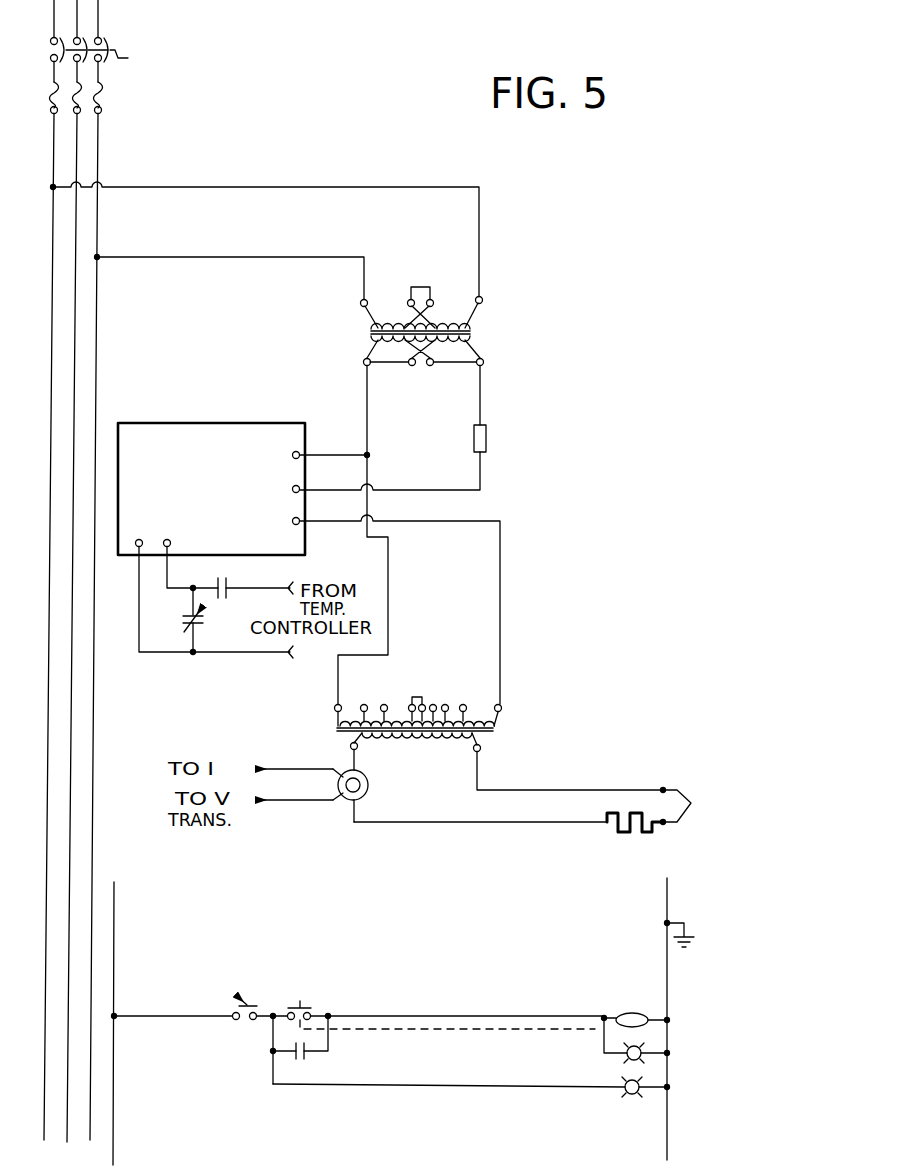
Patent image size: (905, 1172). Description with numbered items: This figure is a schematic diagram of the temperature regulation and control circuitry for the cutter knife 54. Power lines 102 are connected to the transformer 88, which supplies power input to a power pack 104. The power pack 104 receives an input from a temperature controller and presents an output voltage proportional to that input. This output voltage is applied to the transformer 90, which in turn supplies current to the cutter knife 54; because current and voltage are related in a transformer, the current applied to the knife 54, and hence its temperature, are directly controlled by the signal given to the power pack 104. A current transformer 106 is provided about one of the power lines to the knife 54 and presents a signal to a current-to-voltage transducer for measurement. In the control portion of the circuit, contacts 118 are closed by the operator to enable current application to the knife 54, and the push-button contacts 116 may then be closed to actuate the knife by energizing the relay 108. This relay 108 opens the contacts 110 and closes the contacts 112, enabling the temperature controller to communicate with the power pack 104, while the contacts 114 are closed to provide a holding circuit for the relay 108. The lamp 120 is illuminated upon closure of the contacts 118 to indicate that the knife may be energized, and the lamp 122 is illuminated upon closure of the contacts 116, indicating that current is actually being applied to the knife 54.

The power lines 102 is at (128, 105).
The transformer 88 is at (478, 334).
The power pack 104 is at (198, 470).
The contacts 110 is at (184, 620).
The contacts 112 is at (215, 604).
The transformer 90 is at (500, 736).
The current transformer 106 is at (372, 795).
The cutter knife 54 is at (695, 802).
The contacts 118 is at (251, 1003).
The push-button contacts 116 is at (302, 985).
The contacts 114 is at (304, 1058).
The relay 108 is at (625, 1012).
The lamp 122 is at (624, 1056).
The lamp 120 is at (626, 1094).